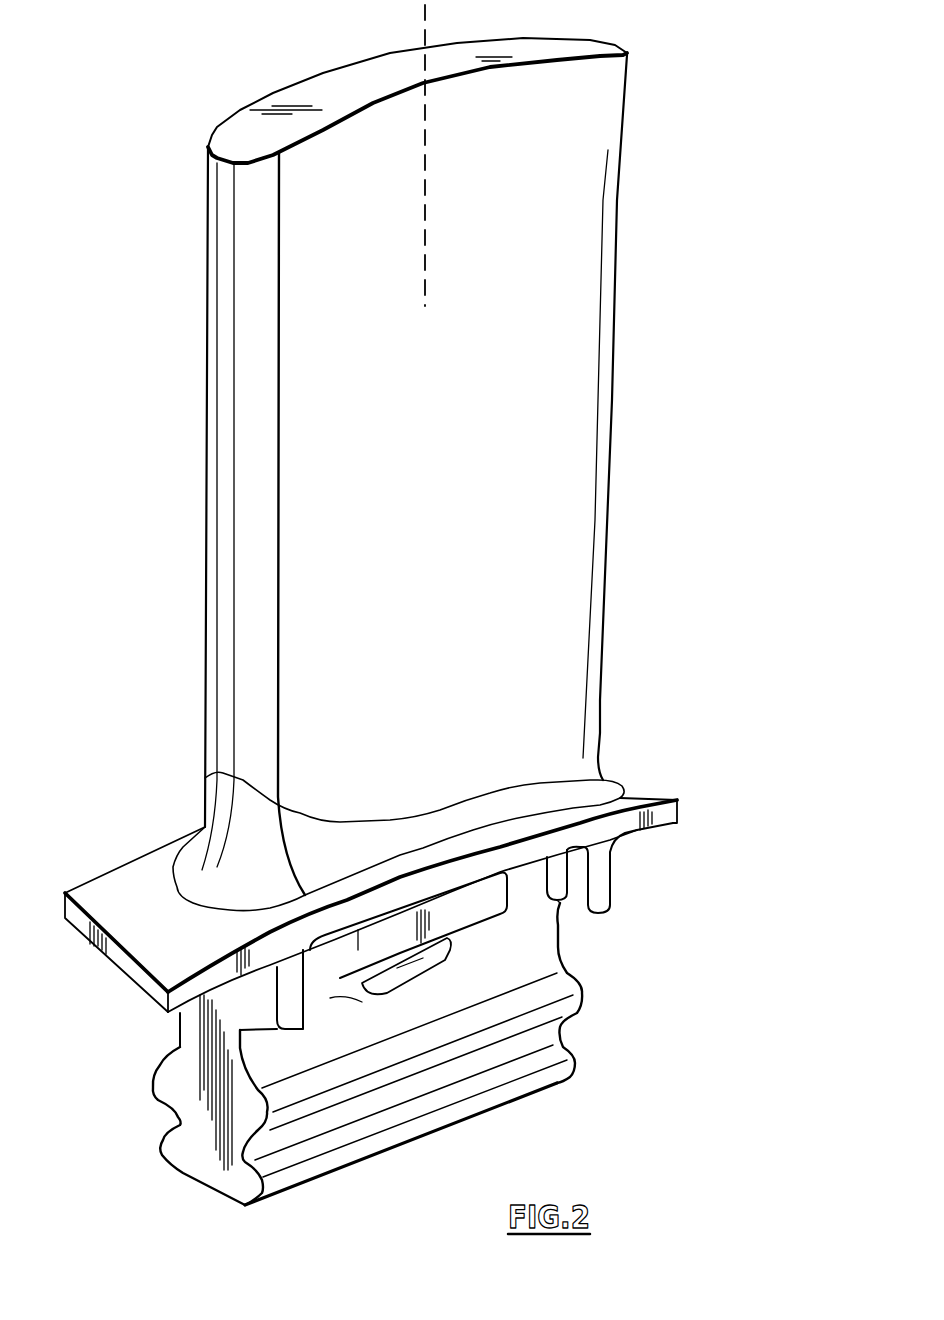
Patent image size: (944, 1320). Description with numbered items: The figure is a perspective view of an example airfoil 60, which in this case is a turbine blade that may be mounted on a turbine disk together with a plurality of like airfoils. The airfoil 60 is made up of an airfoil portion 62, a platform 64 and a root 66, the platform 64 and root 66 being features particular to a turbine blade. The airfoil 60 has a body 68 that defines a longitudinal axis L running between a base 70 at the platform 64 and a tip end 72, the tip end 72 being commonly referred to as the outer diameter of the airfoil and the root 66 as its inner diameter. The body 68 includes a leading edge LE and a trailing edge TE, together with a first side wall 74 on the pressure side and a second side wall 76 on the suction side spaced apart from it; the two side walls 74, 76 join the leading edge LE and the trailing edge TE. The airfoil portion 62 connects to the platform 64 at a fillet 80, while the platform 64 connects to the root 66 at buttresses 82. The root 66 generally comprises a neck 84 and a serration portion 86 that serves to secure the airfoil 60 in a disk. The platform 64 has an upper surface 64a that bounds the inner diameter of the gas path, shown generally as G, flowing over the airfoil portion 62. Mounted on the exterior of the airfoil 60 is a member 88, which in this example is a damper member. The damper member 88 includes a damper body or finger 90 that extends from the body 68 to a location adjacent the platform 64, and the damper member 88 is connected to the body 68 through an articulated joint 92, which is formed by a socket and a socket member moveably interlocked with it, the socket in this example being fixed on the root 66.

The airfoil 60 is at (113, 633).
The airfoil portion 62 is at (578, 419).
The platform 64 is at (600, 733).
The upper surface 64a is at (617, 760).
The root 66 is at (583, 1018).
The body 68 is at (585, 530).
The base 70 is at (130, 940).
The tip end 72 is at (235, 128).
The first side wall 74 is at (593, 152).
The second side wall 76 is at (592, 43).
The fillet 80 is at (217, 843).
The buttresses 82 is at (287, 997).
The neck 84 is at (530, 937).
The serration portion 86 is at (273, 1140).
The member 88 is at (464, 942).
The damper body 90 is at (493, 898).
The articulated joint 92 is at (377, 1003).
The longitudinal axis L is at (427, 212).
The leading edge LE is at (200, 314).
The trailing edge TE is at (613, 333).
The gas path G is at (172, 735).